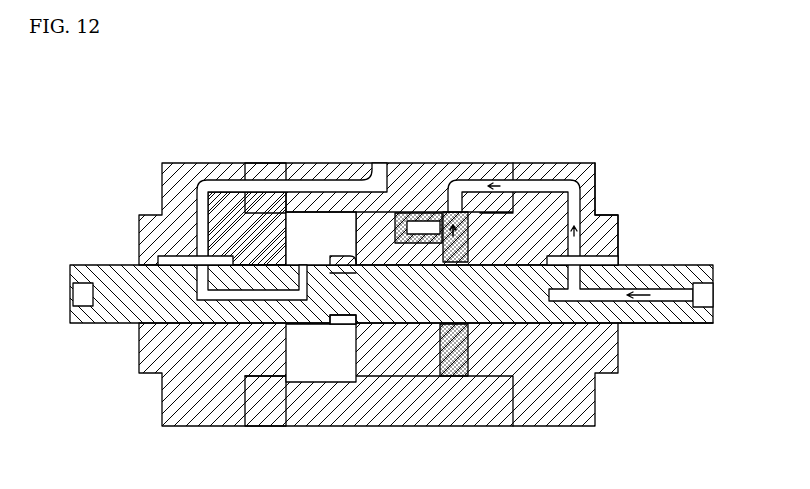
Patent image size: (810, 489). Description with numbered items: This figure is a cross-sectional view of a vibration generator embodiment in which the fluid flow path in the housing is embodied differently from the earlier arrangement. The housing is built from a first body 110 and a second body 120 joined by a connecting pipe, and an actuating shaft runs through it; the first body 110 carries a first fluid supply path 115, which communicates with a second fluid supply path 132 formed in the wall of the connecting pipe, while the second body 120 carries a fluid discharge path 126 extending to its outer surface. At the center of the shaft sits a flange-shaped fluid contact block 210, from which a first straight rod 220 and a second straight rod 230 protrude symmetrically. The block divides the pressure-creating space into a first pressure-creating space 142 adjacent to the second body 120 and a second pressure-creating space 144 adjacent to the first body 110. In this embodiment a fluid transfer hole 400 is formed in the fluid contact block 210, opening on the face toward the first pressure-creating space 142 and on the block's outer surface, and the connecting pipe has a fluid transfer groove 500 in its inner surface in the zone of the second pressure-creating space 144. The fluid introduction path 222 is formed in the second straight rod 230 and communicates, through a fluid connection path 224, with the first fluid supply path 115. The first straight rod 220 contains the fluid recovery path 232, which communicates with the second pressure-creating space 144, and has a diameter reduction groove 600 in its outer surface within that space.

The first body 110 is at (183, 163).
The second body 120 is at (595, 163).
The fluid discharge path 126 is at (228, 188).
The second pressure-creating space 144 is at (328, 195).
The fluid transfer groove 500 is at (322, 237).
The fluid contact block 210 is at (373, 170).
The fluid transfer hole 400 is at (388, 238).
The first pressure-creating space 142 is at (428, 212).
The second fluid supply path 132 is at (460, 210).
The first fluid supply path 115 is at (577, 180).
The first straight rod 220 is at (110, 265).
The fluid connection path 224 is at (620, 263).
The fluid introduction path 222 is at (673, 325).
The second straight rod 230 is at (713, 323).
The fluid recovery path 232 is at (275, 295).
The diameter reduction groove 600 is at (324, 265).